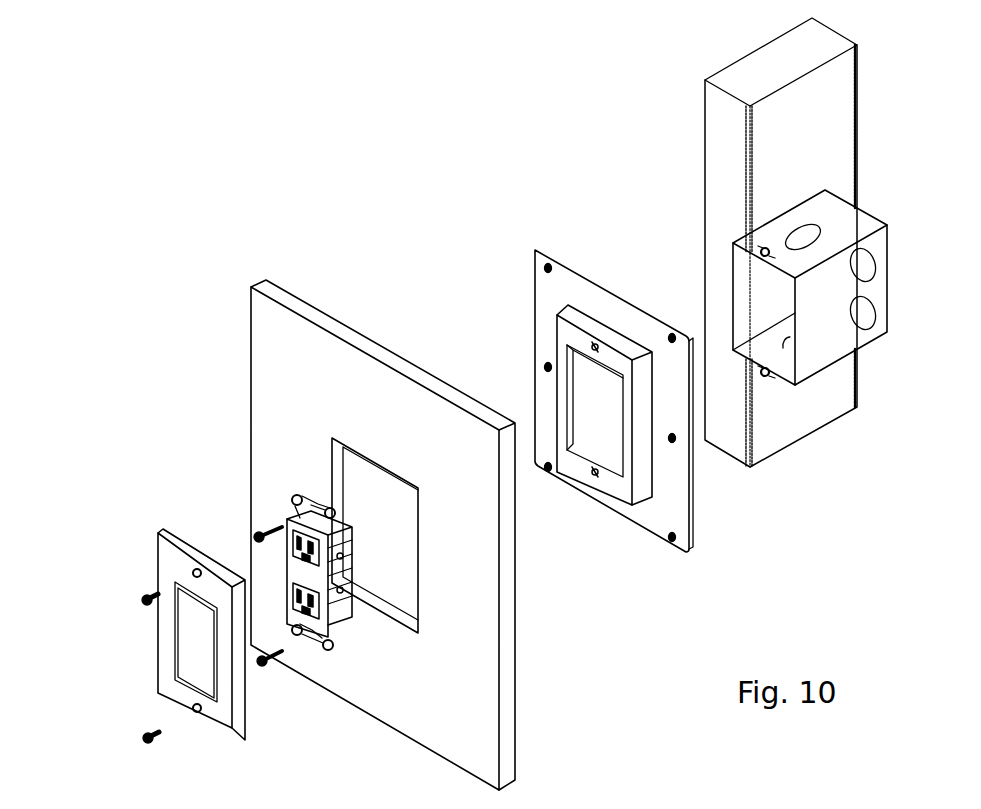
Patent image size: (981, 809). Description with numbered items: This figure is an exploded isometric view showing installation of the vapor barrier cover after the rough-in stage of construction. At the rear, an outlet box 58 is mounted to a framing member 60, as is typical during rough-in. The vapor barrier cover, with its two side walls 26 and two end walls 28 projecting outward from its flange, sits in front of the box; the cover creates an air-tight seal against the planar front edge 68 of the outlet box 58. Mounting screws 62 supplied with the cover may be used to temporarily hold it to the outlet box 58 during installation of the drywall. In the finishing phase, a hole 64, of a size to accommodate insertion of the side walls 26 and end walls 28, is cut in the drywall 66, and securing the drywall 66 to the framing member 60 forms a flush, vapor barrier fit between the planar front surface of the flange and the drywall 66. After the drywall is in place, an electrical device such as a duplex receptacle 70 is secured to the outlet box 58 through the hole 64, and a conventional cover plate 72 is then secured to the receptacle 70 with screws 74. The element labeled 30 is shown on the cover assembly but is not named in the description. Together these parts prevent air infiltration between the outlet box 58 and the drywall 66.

The side walls 26 is at (563, 388).
The end walls 28 is at (578, 318).
The raised sealing frame 30 is at (627, 487).
The outlet box 58 is at (868, 212).
The framing member 60 is at (822, 128).
The mounting screws 62 is at (264, 533).
The hole 64 is at (383, 548).
The drywall 66 is at (308, 370).
The planar front edge 68 is at (826, 297).
The duplex receptacle 70 is at (290, 520).
The cover plate 72 is at (250, 715).
The screws 74 is at (146, 596).